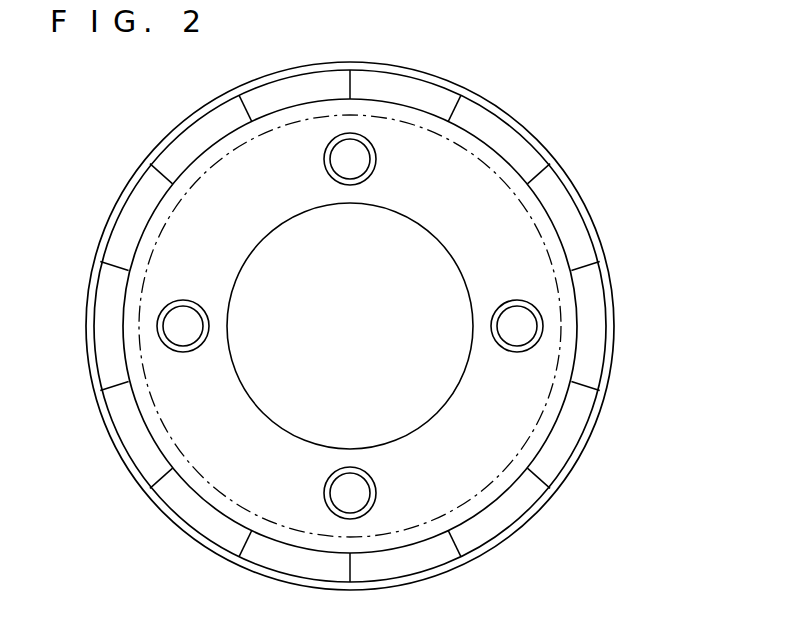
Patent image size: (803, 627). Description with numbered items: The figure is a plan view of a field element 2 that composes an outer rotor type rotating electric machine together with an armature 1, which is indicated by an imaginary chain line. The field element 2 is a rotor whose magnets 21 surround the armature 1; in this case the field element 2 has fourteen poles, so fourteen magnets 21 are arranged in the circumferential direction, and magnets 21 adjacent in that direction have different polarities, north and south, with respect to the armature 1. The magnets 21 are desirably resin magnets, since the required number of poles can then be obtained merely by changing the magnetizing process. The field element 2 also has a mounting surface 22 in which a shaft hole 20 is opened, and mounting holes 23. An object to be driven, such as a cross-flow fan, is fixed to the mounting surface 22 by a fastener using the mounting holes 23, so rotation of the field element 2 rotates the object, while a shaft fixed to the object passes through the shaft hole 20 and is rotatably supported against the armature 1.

The armature 1 is at (550, 209).
The field element 2 is at (412, 326).
The shaft hole 20 is at (392, 445).
The magnet 21 is at (562, 448).
The mounting surface 22 is at (542, 373).
The mounting hole 23 is at (694, 459).